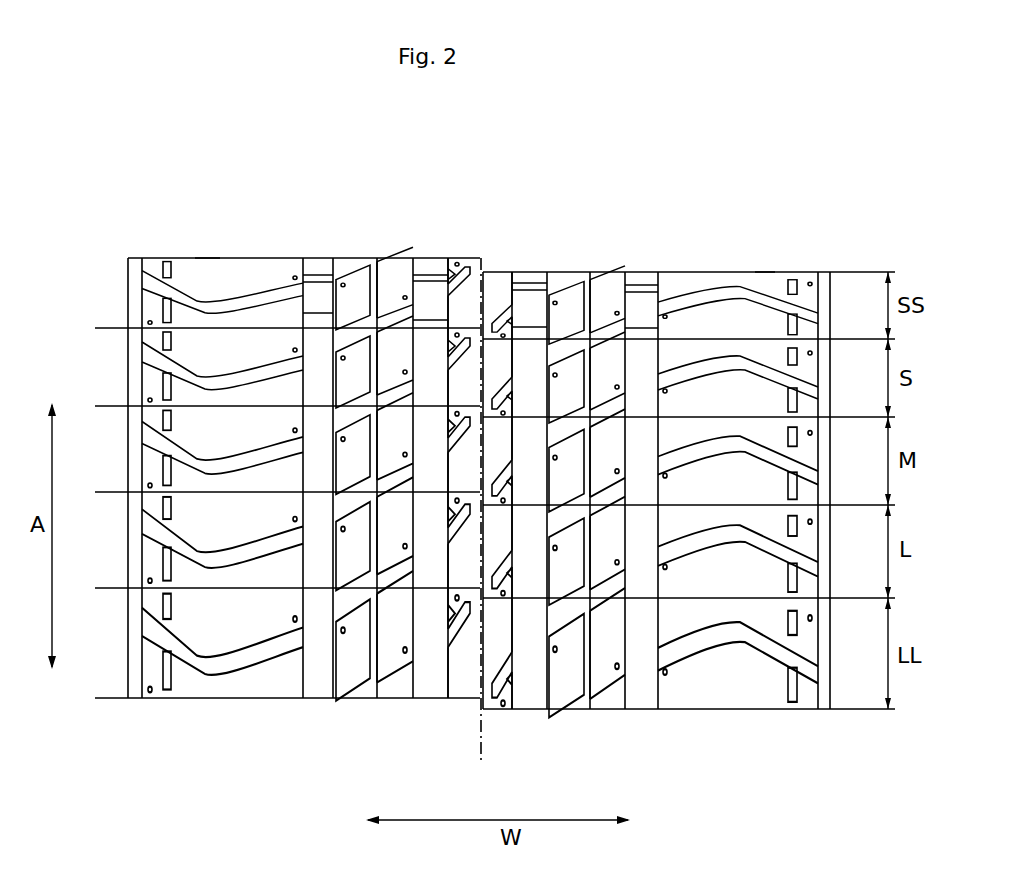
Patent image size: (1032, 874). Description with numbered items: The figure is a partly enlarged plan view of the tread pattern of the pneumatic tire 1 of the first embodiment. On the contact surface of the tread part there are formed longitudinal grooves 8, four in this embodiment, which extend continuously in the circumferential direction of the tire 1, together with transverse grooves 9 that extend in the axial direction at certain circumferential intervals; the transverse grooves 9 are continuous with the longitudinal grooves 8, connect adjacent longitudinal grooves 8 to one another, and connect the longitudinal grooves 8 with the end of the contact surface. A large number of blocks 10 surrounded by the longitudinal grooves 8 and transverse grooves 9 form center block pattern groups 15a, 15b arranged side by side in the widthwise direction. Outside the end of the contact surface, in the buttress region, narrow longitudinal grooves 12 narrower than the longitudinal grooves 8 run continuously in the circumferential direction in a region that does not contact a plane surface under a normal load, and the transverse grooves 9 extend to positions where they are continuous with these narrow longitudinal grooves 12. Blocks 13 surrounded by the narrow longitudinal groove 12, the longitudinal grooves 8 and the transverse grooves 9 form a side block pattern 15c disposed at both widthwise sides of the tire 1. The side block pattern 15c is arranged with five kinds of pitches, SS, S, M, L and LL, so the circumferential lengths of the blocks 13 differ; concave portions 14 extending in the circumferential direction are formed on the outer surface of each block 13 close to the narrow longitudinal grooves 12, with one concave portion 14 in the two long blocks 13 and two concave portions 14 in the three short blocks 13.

The pneumatic tire 1 is at (140, 218).
The longitudinal grooves 8 is at (320, 692).
The transverse grooves 9 is at (347, 264).
The blocks 10 is at (385, 672).
The narrow longitudinal grooves 12 is at (828, 290).
The blocks 13 is at (240, 688).
The concave portions 14 is at (165, 340).
The center block pattern group 15a is at (480, 258).
The center block pattern group 15b is at (375, 258).
The side block pattern 15c is at (207, 258).